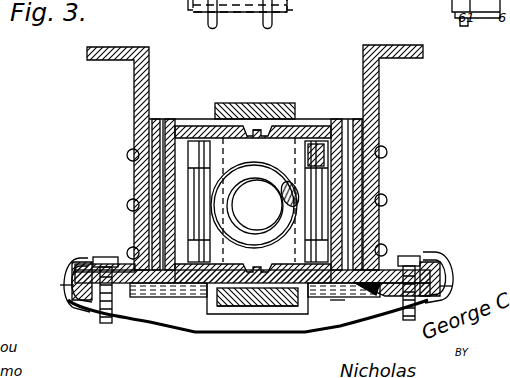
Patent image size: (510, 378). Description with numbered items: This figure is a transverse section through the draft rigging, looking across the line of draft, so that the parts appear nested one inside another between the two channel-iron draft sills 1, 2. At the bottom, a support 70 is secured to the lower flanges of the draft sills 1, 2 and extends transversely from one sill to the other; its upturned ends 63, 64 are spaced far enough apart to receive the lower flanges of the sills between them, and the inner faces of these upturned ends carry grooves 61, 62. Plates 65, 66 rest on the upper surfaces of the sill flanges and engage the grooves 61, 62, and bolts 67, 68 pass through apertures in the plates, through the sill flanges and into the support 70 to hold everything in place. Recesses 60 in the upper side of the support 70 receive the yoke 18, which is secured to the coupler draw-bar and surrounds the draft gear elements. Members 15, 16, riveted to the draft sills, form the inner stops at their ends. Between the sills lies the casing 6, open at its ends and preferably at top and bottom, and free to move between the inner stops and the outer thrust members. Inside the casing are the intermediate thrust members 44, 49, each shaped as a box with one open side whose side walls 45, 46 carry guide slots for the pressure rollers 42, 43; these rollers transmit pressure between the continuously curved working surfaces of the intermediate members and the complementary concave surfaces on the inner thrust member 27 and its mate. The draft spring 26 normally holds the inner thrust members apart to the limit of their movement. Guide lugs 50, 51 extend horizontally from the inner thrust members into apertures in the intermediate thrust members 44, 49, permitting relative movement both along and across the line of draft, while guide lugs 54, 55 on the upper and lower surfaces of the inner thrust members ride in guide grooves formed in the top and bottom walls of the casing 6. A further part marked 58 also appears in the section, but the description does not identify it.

The draft sill 1 is at (134, 141).
The draft sill 2 is at (380, 124).
The casing 6 is at (165, 217).
The member 15 is at (162, 192).
The member 16 is at (342, 185).
The yoke 18 is at (258, 103).
The draft spring 26 is at (274, 185).
The inner thrust member 27 is at (253, 264).
The pressure roller 42 is at (198, 185).
The pressure roller 43 is at (315, 172).
The intermediate thrust member 44 is at (152, 172).
The side wall 45 is at (205, 126).
The side wall 46 is at (192, 300).
The intermediate thrust member 49 is at (348, 195).
The guide lug 50 is at (322, 302).
The guide lug 51 is at (318, 150).
The guide lug 54 is at (258, 129).
The guide lug 55 is at (282, 308).
The tapered base piece 58 is at (372, 292).
The recess 60 is at (232, 314).
The groove 61 is at (448, 268).
The groove 62 is at (68, 270).
The upturned end 63 is at (440, 262).
The upturned end 64 is at (84, 262).
The plate 65 is at (398, 268).
The plate 66 is at (125, 264).
The bolt 67 is at (445, 287).
The bolt 68 is at (62, 286).
The support 70 is at (150, 318).